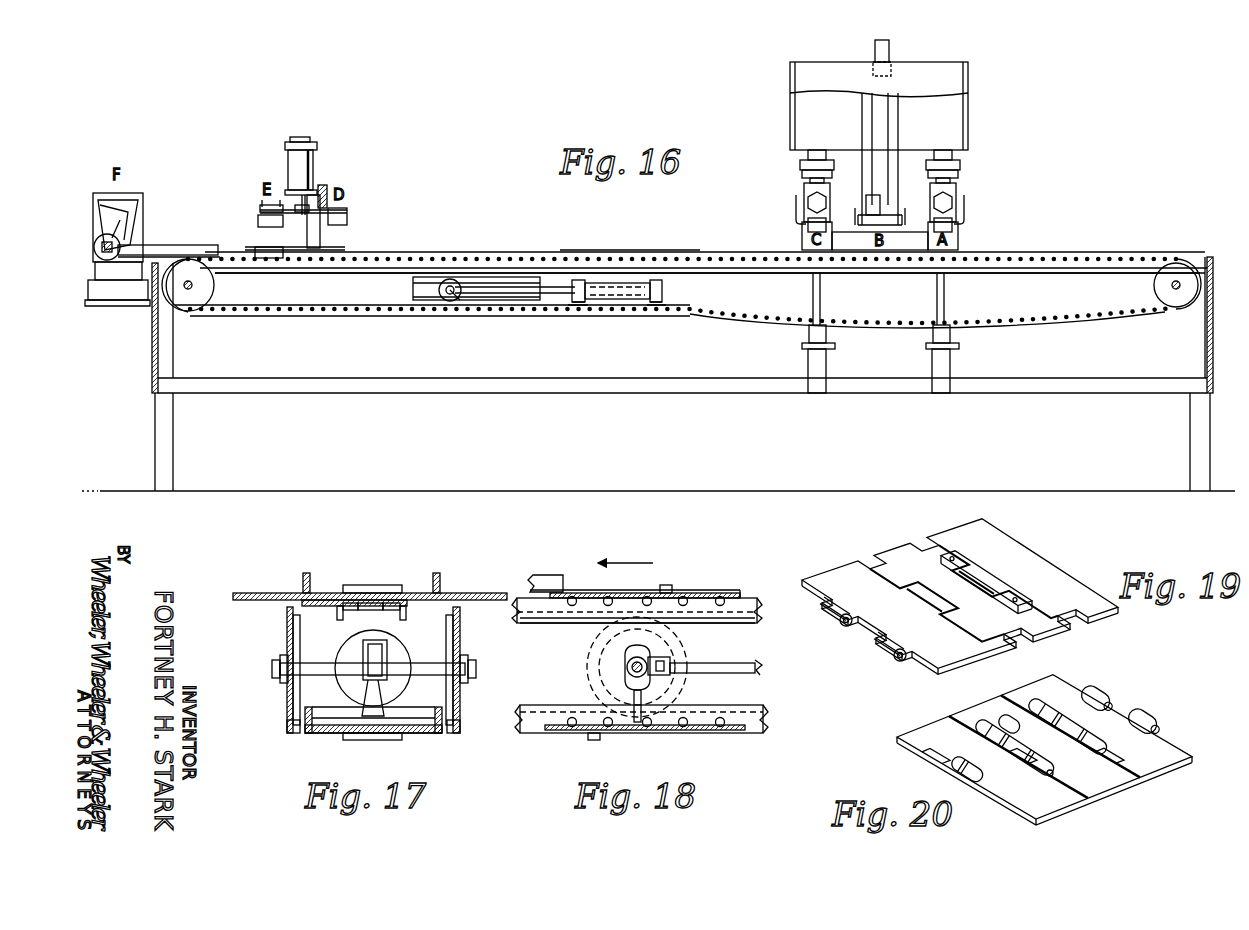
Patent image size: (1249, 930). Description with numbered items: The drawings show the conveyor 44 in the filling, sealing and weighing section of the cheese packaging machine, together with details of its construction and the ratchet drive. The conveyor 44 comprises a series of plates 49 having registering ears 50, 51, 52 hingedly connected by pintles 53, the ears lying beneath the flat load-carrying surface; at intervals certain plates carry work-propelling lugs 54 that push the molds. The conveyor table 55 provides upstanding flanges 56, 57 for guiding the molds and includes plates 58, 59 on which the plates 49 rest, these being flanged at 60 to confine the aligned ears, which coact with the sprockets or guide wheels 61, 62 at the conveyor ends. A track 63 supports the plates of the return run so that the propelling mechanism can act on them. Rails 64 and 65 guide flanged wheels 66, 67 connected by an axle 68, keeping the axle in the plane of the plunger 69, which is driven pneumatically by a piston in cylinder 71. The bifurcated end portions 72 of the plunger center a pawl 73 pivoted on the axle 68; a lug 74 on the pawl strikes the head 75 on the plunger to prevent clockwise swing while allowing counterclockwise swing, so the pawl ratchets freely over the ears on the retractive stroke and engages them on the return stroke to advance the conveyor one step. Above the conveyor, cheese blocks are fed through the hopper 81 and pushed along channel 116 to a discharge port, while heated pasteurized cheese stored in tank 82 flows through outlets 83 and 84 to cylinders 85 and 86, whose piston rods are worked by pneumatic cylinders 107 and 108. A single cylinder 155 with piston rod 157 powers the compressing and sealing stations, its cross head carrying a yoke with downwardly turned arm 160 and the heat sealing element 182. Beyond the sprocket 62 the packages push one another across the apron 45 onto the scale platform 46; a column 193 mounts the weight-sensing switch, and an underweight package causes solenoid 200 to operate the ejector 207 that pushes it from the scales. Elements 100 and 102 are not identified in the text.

In FIG. 16, the conveyor 44 is at (1176, 256).
In FIG. 17, the conveyor 44 is at (418, 590).
In FIG. 18, the conveyor 44 is at (562, 592).
In FIG. 19, the conveyor 44 is at (950, 523).
In FIG. 20, the conveyor 44 is at (1068, 680).
In FIG. 16, the apron 45 is at (160, 252).
In FIG. 16, the scale platform 46 is at (108, 270).
In FIG. 16, the plates 49 is at (600, 258).
In FIG. 17, the plates 49 is at (330, 596).
In FIG. 18, the plates 49 is at (732, 596).
In FIG. 19, the plates 49 is at (840, 570).
In FIG. 17, the ears 50 is at (390, 613).
In FIG. 19, the ears 50 is at (885, 660).
In FIG. 20, the ears 50 is at (1108, 700).
In FIG. 17, the ears 51 is at (370, 613).
In FIG. 19, the ears 51 is at (922, 604).
In FIG. 20, the ears 51 is at (955, 772).
In FIG. 17, the ears 52 is at (354, 613).
In FIG. 19, the ears 52 is at (842, 626).
In FIG. 20, the ears 52 is at (1150, 720).
In FIG. 20, the pintles 53 is at (1100, 768).
In FIG. 17, the work-propelling lugs 54 is at (370, 585).
In FIG. 18, the work-propelling lugs 54 is at (672, 585).
In FIG. 19, the work-propelling lugs 54 is at (1030, 595).
In FIG. 16, the conveyor table 55 is at (668, 248).
In FIG. 17, the conveyor table 55 is at (262, 593).
In FIG. 16, the upstanding flange 56 is at (696, 252).
In FIG. 17, the upstanding flange 56 is at (303, 578).
In FIG. 18, the upstanding flange 56 is at (740, 590).
In FIG. 17, the upstanding flange 57 is at (441, 578).
In FIG. 17, the plate 58 is at (336, 608).
In FIG. 17, the plate 59 is at (407, 609).
In FIG. 18, the plate 59 is at (752, 614).
In FIG. 16, the flange 60 is at (705, 268).
In FIG. 17, the flange 60 is at (384, 648).
In FIG. 18, the flange 60 is at (540, 610).
In FIG. 16, the sprocket or guide wheel 61 is at (1153, 285).
In FIG. 16, the sprocket or guide wheel 62 is at (215, 285).
In FIG. 16, the track 63 is at (312, 318).
In FIG. 17, the track 63 is at (328, 733).
In FIG. 17, the rail 64 is at (292, 733).
In FIG. 18, the rail 64 is at (765, 712).
In FIG. 17, the rail 65 is at (287, 612).
In FIG. 18, the rail 65 is at (758, 618).
In FIG. 17, the flanged wheel 66 is at (282, 638).
In FIG. 18, the flanged wheel 66 is at (604, 645).
In FIG. 17, the flanged wheel 67 is at (460, 638).
In FIG. 17, the axle 68 is at (318, 663).
In FIG. 18, the axle 68 is at (626, 665).
In FIG. 16, the plunger 69 is at (535, 278).
In FIG. 18, the plunger 69 is at (729, 667).
In FIG. 16, the cylinder 71 is at (640, 300).
In FIG. 17, the bifurcated end portions 72 is at (385, 660).
In FIG. 18, the bifurcated end portions 72 is at (636, 652).
In FIG. 17, the pawl 73 is at (402, 705).
In FIG. 18, the pawl 73 is at (630, 685).
In FIG. 18, the lug 74 is at (660, 657).
In FIG. 18, the head 75 is at (668, 664).
In FIG. 16, the hopper 81 is at (898, 132).
In FIG. 16, the tank 82 is at (948, 138).
In FIG. 16, the outlet 83 is at (960, 163).
In FIG. 16, the outlet 84 is at (800, 163).
In FIG. 16, the cylinder 85 is at (956, 186).
In FIG. 16, the cylinder 86 is at (804, 186).
In FIG. 16, the block 100 is at (958, 228).
In FIG. 16, the block 102 is at (806, 228).
In FIG. 16, the pneumatic cylinder 107 is at (948, 352).
In FIG. 16, the pneumatic cylinder 108 is at (820, 352).
In FIG. 16, the channel 116 is at (870, 210).
In FIG. 16, the cylinder 155 is at (310, 164).
In FIG. 16, the piston rod 157 is at (298, 190).
In FIG. 16, the downwardly turned arm 160 is at (340, 218).
In FIG. 16, the heat sealing element 182 is at (282, 226).
In FIG. 16, the column 193 is at (130, 200).
In FIG. 16, the solenoid 200 is at (115, 236).
In FIG. 16, the ejector 207 is at (112, 246).